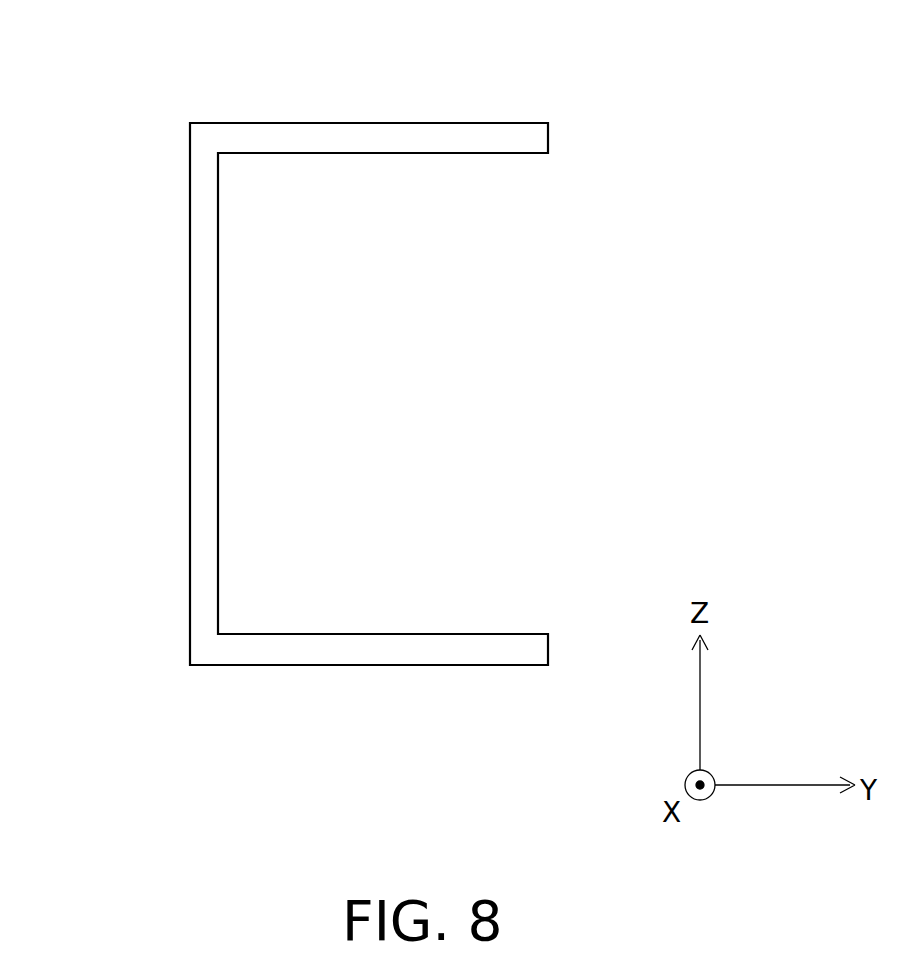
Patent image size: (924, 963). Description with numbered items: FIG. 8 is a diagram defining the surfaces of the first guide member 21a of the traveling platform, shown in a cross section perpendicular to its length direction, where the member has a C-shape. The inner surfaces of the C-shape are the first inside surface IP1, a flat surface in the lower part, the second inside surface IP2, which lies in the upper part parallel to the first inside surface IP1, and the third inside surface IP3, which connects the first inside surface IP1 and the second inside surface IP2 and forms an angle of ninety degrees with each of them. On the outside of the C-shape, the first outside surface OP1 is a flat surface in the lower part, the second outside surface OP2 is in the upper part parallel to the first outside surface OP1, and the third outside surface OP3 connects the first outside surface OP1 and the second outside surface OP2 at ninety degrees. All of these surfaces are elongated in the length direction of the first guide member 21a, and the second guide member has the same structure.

The first guide member 21a is at (636, 121).
The first outside surface OP1 is at (347, 665).
The second outside surface OP2 is at (346, 123).
The third outside surface OP3 is at (190, 362).
The first inside surface IP1 is at (423, 634).
The second inside surface IP2 is at (420, 153).
The third inside surface IP3 is at (218, 425).